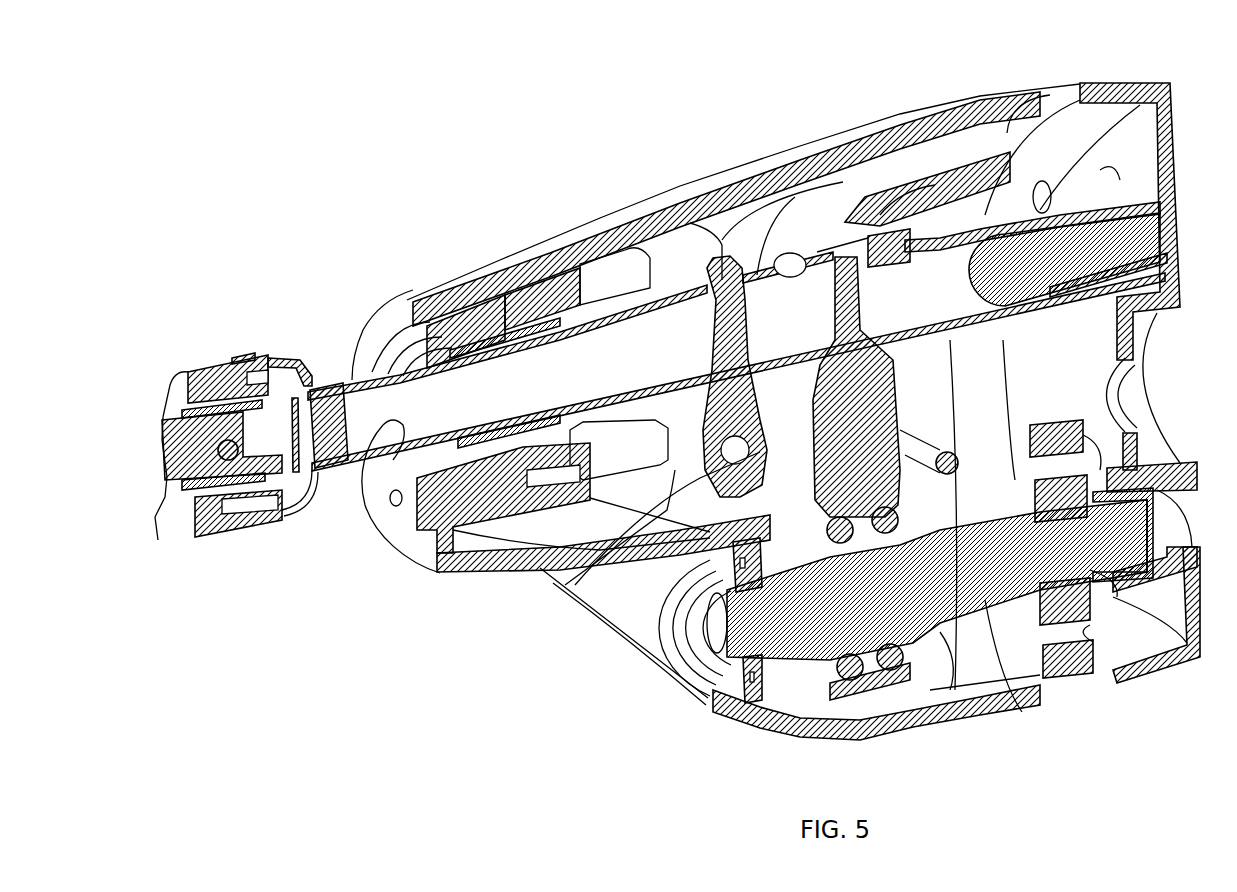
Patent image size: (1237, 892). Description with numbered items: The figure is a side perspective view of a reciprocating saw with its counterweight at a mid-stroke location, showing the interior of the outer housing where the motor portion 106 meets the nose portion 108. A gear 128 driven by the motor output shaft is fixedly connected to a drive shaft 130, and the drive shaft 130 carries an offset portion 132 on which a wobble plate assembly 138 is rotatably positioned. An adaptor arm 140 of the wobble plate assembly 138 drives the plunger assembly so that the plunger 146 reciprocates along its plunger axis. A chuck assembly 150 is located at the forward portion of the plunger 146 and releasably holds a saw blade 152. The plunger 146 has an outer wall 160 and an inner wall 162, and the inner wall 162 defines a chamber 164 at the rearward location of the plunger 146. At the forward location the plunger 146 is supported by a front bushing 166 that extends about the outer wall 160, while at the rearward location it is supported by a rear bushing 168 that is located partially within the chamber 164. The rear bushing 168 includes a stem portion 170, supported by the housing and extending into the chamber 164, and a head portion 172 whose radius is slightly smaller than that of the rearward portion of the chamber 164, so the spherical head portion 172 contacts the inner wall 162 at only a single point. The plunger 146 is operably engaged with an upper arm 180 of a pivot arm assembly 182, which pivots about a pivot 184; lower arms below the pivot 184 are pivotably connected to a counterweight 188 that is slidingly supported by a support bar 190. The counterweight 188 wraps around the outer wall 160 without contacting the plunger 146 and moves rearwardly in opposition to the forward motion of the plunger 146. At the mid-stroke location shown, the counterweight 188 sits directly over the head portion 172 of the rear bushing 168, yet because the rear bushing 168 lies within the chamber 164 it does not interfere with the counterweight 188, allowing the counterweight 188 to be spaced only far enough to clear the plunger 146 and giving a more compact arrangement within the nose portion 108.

The motor portion 106 is at (1165, 88).
The nose portion 108 is at (730, 158).
The gear 128 is at (1075, 672).
The drive shaft 130 is at (1020, 713).
The offset portion 132 is at (912, 718).
The wobble plate assembly 138 is at (796, 735).
The adaptor arm 140 is at (808, 250).
The plunger 146 is at (618, 248).
The chuck assembly 150 is at (262, 355).
The saw blade 152 is at (155, 530).
The outer wall 160 is at (548, 272).
The inner wall 162 is at (376, 472).
The chamber 164 is at (905, 200).
The front bushing 166 is at (480, 290).
The rear bushing 168 is at (1092, 188).
The stem portion 170 is at (1178, 225).
The head portion 172 is at (1050, 175).
The upper arm 180 is at (690, 215).
The pivot arm assembly 182 is at (668, 412).
The pivot 184 is at (587, 577).
The counterweight 188 is at (935, 170).
The support bar 190 is at (968, 712).